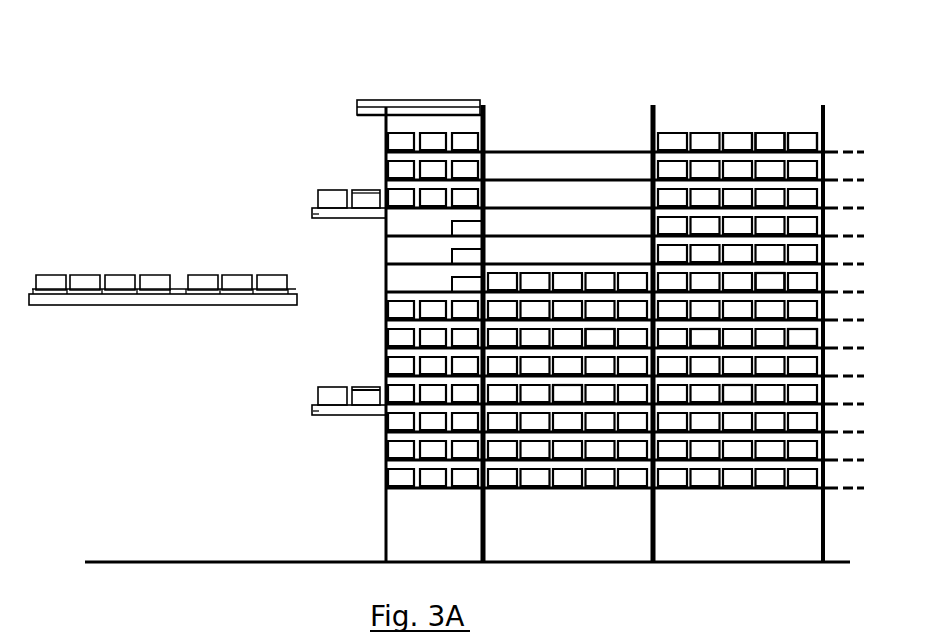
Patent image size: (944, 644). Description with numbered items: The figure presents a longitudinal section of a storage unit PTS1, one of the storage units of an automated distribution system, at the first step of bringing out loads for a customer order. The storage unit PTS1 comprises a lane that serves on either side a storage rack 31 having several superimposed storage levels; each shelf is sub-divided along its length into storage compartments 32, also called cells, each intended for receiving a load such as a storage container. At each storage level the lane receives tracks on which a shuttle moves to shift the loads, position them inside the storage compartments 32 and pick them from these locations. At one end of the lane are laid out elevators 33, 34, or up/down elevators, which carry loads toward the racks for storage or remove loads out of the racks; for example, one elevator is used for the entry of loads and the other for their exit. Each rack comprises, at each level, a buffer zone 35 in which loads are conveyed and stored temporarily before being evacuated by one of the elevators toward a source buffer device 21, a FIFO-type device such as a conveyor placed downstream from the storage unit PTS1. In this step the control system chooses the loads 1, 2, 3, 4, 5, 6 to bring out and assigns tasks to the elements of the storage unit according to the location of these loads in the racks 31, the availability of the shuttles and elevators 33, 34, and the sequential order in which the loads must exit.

The storage unit PTS1 is at (568, 82).
The storage rack 31 is at (655, 120).
The storage compartments 32 is at (800, 140).
The elevator 33 is at (348, 193).
The elevator 34 is at (348, 390).
The buffer zone 35 is at (417, 110).
The source buffer device 21 is at (165, 299).
The load 1 is at (705, 337).
The load 2 is at (737, 393).
The load 3 is at (600, 337).
The load 4 is at (770, 281).
The load 5 is at (802, 337).
The load 6 is at (567, 393).